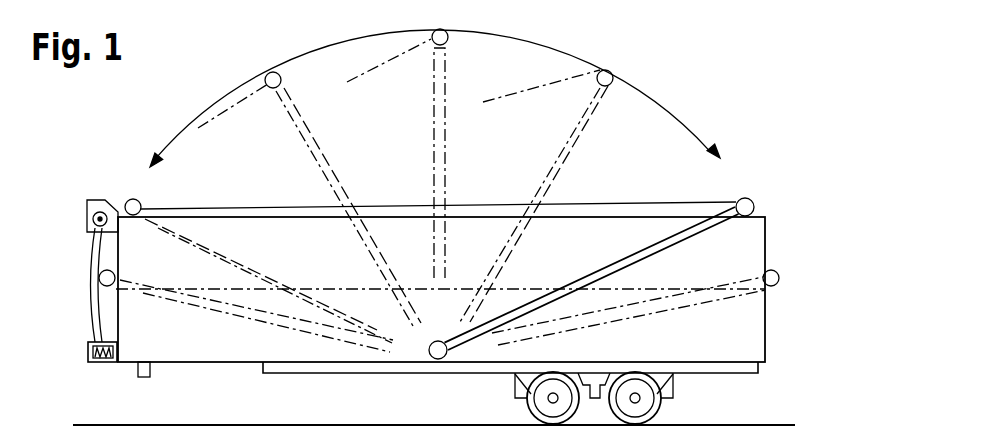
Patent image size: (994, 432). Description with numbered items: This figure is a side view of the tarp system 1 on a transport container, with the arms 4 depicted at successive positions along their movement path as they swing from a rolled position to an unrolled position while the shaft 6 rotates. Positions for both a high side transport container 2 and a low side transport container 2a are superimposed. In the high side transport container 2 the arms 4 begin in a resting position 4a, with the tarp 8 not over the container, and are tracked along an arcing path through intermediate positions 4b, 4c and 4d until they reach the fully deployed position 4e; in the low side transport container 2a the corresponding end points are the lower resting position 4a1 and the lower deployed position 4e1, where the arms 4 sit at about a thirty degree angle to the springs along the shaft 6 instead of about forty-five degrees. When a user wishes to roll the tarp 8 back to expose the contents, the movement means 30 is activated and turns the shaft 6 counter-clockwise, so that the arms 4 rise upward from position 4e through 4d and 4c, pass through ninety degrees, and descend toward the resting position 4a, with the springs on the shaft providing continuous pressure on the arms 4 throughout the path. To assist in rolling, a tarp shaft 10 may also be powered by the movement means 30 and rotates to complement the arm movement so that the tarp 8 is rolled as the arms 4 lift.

The tarpaulin covering system 1 is at (730, 112).
The high side transport container 2 is at (765, 338).
The low side transport container 2a is at (115, 315).
The arms 4 is at (705, 232).
The resting position 4a is at (128, 202).
The resting position in low side transport container 4a1 is at (138, 289).
The intermediate arm position 4b is at (328, 152).
The intermediate arm position 4c is at (447, 158).
The intermediate arm position 4d is at (562, 169).
The fully deployed position 4e is at (692, 225).
The fully deployed position in low side transport container 4e1 is at (727, 295).
The shaft 6 is at (436, 358).
The tarp 8 is at (256, 207).
The tarp shaft 10 is at (93, 219).
The movement means 30 is at (88, 353).